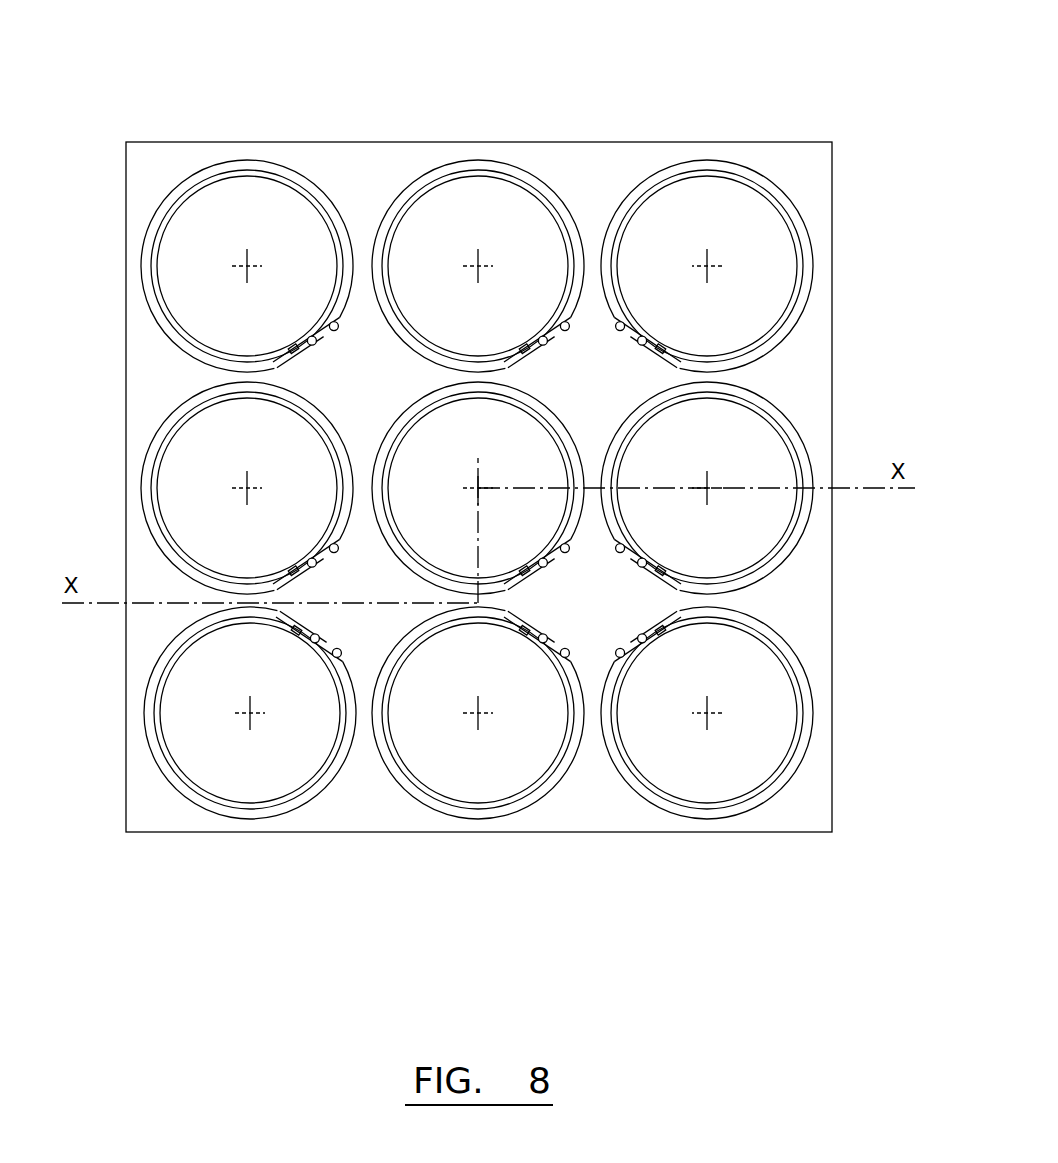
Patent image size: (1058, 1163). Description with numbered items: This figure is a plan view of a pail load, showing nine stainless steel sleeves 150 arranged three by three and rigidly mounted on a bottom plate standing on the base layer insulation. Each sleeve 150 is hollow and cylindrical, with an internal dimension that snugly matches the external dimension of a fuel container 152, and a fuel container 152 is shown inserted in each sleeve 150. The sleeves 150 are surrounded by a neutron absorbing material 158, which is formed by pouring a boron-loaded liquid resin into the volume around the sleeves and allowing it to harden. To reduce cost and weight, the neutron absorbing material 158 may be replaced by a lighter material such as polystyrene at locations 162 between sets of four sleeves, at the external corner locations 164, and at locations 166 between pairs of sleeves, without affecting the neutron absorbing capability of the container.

The stainless steel sleeve 150 is at (535, 802).
The fuel container 152 is at (488, 767).
The neutron absorbing material 158 is at (357, 795).
The locations between sets of four sleeves 162 is at (363, 358).
The corner locations 164 is at (803, 156).
The locations between pairs of sleeves 166 is at (804, 357).